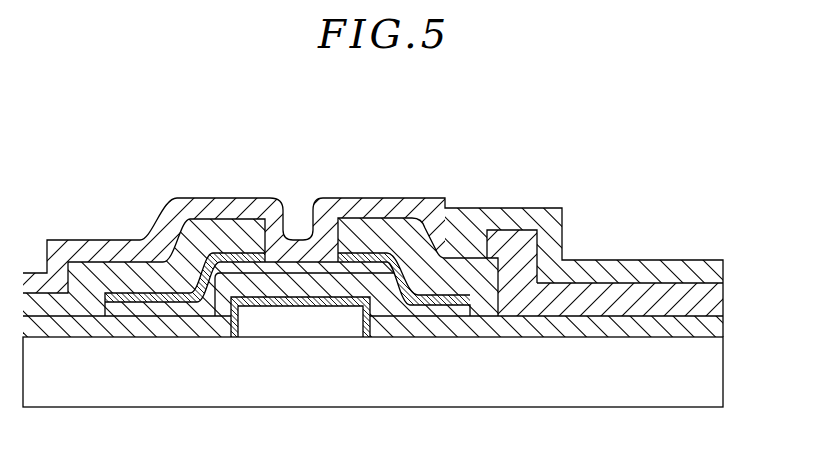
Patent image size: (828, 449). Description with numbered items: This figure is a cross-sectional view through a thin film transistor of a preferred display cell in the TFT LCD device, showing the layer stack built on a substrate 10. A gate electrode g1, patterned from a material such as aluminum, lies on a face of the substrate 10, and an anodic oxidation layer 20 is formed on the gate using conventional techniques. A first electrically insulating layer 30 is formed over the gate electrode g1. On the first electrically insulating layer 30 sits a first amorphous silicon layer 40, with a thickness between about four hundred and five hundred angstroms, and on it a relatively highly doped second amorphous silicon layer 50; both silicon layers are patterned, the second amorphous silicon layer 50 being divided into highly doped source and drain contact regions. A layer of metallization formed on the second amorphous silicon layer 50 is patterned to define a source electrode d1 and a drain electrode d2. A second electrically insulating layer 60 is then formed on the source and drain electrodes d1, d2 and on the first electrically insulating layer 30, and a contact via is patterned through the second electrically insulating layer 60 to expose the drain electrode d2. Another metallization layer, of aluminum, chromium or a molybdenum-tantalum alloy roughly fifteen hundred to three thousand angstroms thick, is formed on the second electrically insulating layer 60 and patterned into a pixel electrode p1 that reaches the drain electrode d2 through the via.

The substrate 10 is at (715, 366).
The anodic oxidation layer 20 is at (288, 272).
The first electrically insulating layer 30 is at (714, 328).
The first amorphous silicon layer 40 is at (346, 228).
The second amorphous silicon layer 50 is at (143, 293).
The second electrically insulating layer 60 is at (713, 294).
The source electrode d1 is at (213, 232).
The drain electrode d2 is at (377, 233).
The gate electrode g1 is at (302, 317).
The pixel electrode p1 is at (502, 215).